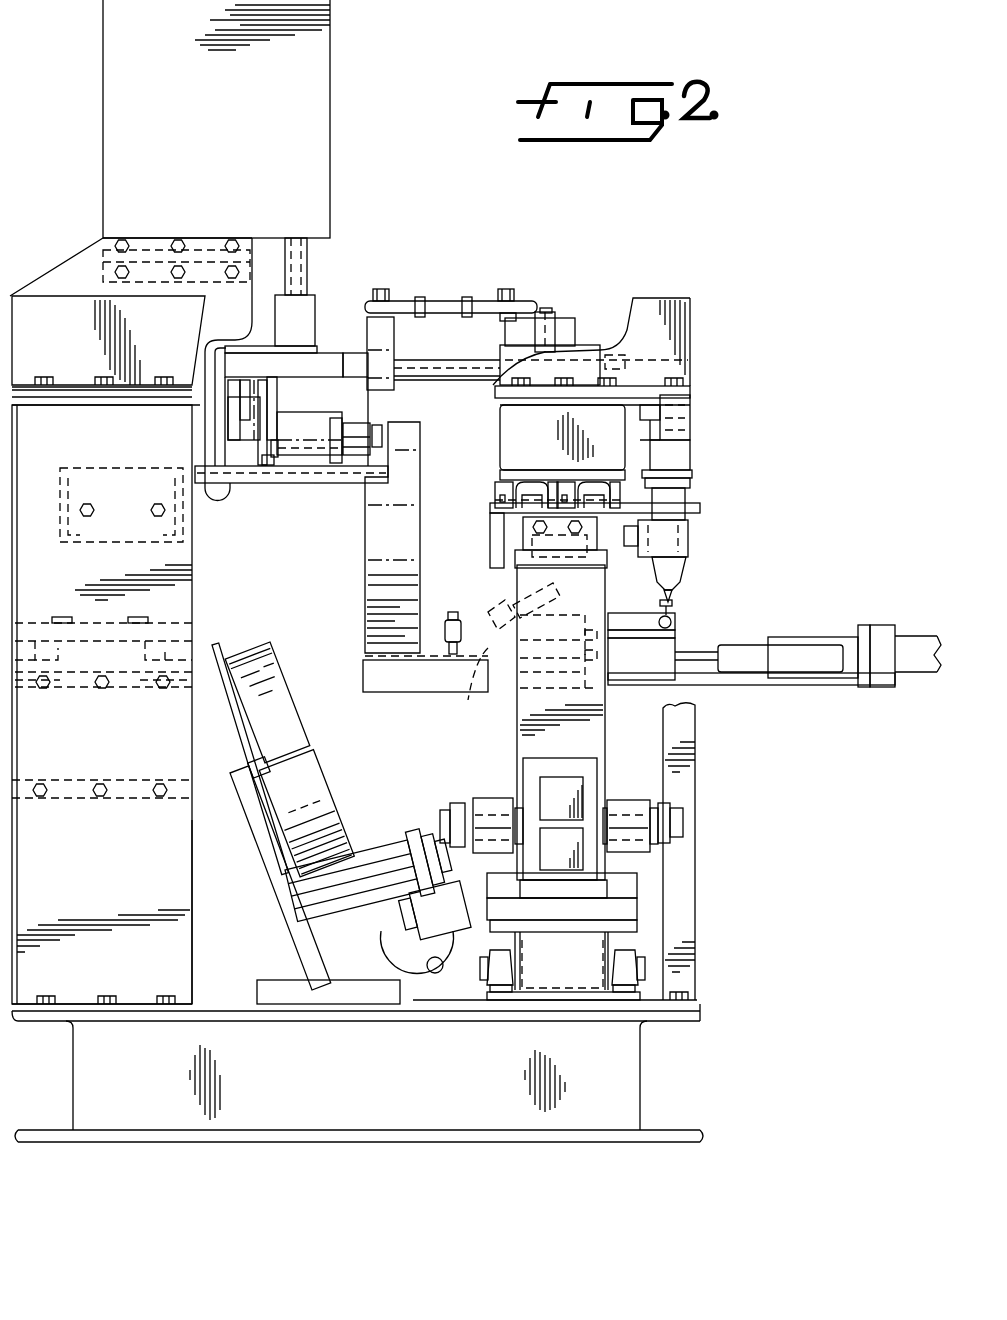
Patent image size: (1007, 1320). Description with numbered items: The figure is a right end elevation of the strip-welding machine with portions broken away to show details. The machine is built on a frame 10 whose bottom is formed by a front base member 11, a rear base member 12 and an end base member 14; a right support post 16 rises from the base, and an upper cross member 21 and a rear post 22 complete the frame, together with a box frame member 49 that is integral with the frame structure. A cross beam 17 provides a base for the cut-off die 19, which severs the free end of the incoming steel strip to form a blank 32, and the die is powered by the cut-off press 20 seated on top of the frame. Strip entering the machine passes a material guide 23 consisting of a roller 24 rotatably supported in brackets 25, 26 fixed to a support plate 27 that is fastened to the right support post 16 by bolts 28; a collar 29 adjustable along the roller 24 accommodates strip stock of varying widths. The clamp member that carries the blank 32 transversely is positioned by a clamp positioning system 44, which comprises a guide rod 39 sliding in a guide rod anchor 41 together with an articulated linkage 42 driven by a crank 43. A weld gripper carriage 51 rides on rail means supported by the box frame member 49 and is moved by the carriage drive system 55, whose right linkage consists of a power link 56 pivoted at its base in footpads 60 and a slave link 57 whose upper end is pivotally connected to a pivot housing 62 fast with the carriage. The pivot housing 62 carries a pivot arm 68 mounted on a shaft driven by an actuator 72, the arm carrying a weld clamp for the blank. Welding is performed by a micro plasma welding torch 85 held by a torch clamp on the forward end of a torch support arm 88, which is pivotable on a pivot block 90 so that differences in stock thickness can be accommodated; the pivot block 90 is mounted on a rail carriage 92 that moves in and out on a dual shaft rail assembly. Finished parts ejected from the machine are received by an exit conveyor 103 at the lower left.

The frame 10 is at (658, 1077).
The front base member 11 is at (130, 1118).
The rear base member 12 is at (534, 438).
The end base member 14 is at (200, 910).
The right support post 16 is at (185, 862).
The cross beam 17 is at (168, 748).
The cut-off die 19 is at (320, 288).
The cut-off press 20 is at (322, 118).
The upper cross member 21 is at (56, 308).
The rear post 22 is at (692, 900).
The material guide 23 is at (298, 458).
The roller 24 is at (295, 433).
The bracket 25 is at (272, 462).
The bracket 26 is at (384, 430).
The support plate 27 is at (352, 485).
The bolts 28 is at (87, 517).
The collar 29 is at (350, 436).
The blank 32 is at (316, 426).
The guide rod 39 is at (432, 352).
The guide rod anchor 41 is at (500, 347).
The articulated linkage 42 is at (443, 302).
The crank 43 is at (540, 318).
The clamp positioning system 44 is at (495, 290).
The box frame member 49 is at (512, 414).
The weld gripper carriage 51 is at (624, 490).
The carriage drive system 55 is at (587, 789).
The power link 56 is at (518, 734).
The slave link 57 is at (538, 542).
The footpads 60 is at (627, 968).
The pivot housing 62 is at (502, 528).
The pivot arm 68 is at (435, 600).
The actuator 72 is at (692, 450).
The welding torch 85 is at (466, 690).
The torch support arm 88 is at (576, 624).
The pivot block 90 is at (643, 620).
The rail carriage 92 is at (685, 643).
The exit conveyor 103 is at (290, 944).